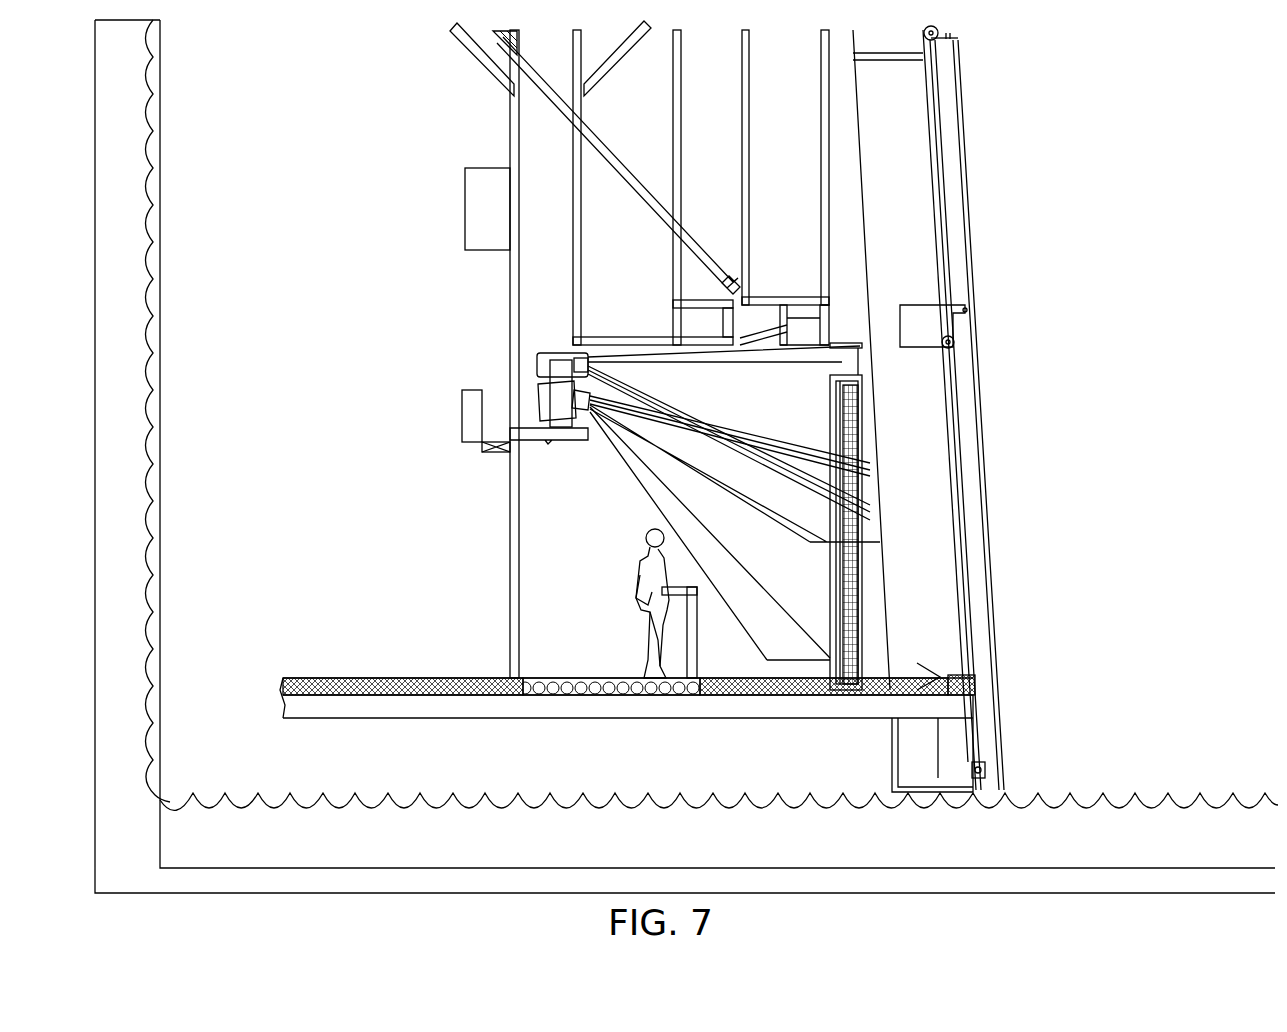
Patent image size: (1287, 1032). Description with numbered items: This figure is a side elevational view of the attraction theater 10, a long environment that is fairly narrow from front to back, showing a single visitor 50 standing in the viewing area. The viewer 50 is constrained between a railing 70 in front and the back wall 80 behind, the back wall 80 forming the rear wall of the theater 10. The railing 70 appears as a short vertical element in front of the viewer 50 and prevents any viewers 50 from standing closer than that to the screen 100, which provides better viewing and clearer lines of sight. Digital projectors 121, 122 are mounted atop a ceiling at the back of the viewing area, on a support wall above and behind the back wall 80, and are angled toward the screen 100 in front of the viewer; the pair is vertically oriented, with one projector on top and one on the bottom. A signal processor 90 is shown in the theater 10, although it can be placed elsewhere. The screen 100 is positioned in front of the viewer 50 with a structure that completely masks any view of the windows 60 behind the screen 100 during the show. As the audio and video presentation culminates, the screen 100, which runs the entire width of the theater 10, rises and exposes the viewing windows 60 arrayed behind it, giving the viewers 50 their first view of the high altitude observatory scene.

The theater 10 is at (592, 535).
The viewer 50 is at (647, 605).
The viewing windows 60 is at (976, 404).
The railing 70 is at (700, 647).
The back wall 80 is at (508, 617).
The signal processor 90 is at (465, 213).
The screen 100 is at (847, 622).
The digital projector 121 is at (537, 355).
The digital projector 122 is at (540, 400).